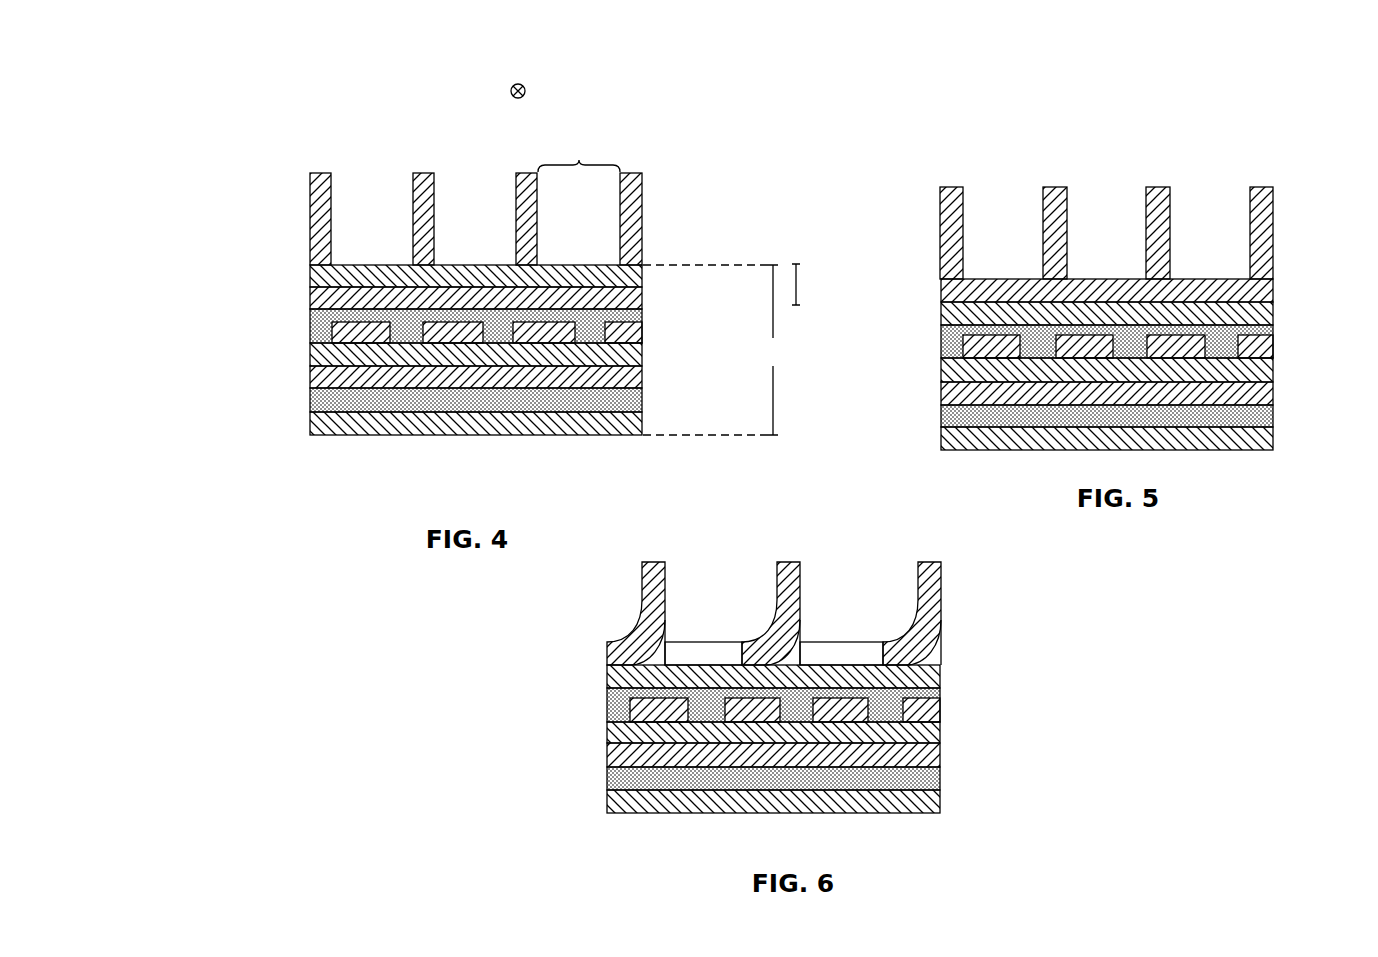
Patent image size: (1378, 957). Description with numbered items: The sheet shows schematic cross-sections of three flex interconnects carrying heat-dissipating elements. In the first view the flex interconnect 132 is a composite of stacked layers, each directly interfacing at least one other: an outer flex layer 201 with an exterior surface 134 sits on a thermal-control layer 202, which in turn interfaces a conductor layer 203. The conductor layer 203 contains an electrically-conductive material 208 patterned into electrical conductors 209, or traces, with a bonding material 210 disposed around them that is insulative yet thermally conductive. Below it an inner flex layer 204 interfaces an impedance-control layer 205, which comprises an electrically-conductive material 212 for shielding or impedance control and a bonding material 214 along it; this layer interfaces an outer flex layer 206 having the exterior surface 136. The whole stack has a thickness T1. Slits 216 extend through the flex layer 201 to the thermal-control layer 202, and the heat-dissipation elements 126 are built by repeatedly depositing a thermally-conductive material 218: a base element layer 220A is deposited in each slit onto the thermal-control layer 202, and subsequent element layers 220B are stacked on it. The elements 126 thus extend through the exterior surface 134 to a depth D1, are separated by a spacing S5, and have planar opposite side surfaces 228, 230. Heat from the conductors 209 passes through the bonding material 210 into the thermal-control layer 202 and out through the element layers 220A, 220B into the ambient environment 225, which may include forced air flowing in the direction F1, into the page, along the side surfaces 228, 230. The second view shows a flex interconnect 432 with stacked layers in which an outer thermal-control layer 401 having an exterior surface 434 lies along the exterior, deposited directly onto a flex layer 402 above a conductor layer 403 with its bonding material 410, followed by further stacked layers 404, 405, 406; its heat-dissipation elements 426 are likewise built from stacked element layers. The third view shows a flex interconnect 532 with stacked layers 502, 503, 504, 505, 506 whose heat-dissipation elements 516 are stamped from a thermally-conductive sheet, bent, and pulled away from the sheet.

In FIG. 4, the flex interconnect 132 is at (240, 197).
In FIG. 4, the exterior surface 136 is at (418, 448).
In FIG. 4, the ambient environment 225 is at (417, 96).
In FIG. 4, the heat-dissipation elements 126 is at (309, 183).
In FIG. 4, the thermally-conductive material 218 is at (309, 203).
In FIG. 4, the side surface 228 is at (408, 197).
In FIG. 4, the side surface 230 is at (440, 197).
In FIG. 4, the slits 216 is at (508, 262).
In FIG. 4, the subsequent element layers 220B is at (638, 205).
In FIG. 4, the base element layer 220A is at (648, 272).
In FIG. 4, the outer flex layer 201 is at (572, 262).
In FIG. 4, the exterior surface 134 is at (597, 258).
In FIG. 4, the thermal-control layer 202 is at (645, 295).
In FIG. 4, the electrically-conductive material 208 is at (362, 298).
In FIG. 4, the conductor layer 203 is at (645, 343).
In FIG. 4, the electrical conductors 209 is at (318, 323).
In FIG. 4, the bonding material 210 is at (490, 330).
In FIG. 4, the inner flex layer 204 is at (645, 358).
In FIG. 4, the impedance-control layer 205 is at (645, 413).
In FIG. 4, the electrically-conductive material 212 is at (325, 372).
In FIG. 4, the bonding material 214 is at (335, 400).
In FIG. 4, the outer flex layer 206 is at (645, 425).
In FIG. 4, the thickness T1 is at (715, 350).
In FIG. 4, the depth D1 is at (800, 284).
In FIG. 4, the spacing S5 is at (579, 152).
In FIG. 4, the direction of forced air F1 is at (521, 84).
In FIG. 5, the flex interconnect 432 is at (1272, 117).
In FIG. 5, the heat-dissipation elements 426 is at (940, 225).
In FIG. 5, the exterior surface 434 is at (990, 272).
In FIG. 5, the bonding material 410 is at (1213, 335).
In FIG. 5, the outer thermal-control layer 401 is at (1276, 292).
In FIG. 5, the flex layer 402 is at (1277, 312).
In FIG. 5, the conductor layer 403 is at (1277, 358).
In FIG. 5, the stacked layer 404 is at (1277, 372).
In FIG. 5, the stacked layer 405 is at (1277, 382).
In FIG. 5, the stacked layer 406 is at (1277, 443).
In FIG. 6, the flex interconnect 532 is at (992, 587).
In FIG. 6, the heat-dissipation elements 516 is at (642, 600).
In FIG. 6, the stacked layer 502 is at (942, 677).
In FIG. 6, the stacked layer 503 is at (944, 722).
In FIG. 6, the stacked layer 504 is at (942, 735).
In FIG. 6, the stacked layer 505 is at (944, 743).
In FIG. 6, the stacked layer 506 is at (942, 800).